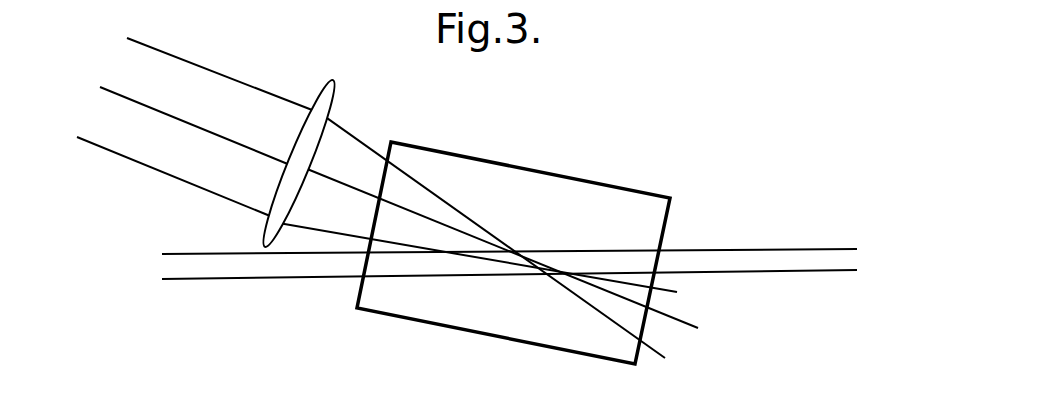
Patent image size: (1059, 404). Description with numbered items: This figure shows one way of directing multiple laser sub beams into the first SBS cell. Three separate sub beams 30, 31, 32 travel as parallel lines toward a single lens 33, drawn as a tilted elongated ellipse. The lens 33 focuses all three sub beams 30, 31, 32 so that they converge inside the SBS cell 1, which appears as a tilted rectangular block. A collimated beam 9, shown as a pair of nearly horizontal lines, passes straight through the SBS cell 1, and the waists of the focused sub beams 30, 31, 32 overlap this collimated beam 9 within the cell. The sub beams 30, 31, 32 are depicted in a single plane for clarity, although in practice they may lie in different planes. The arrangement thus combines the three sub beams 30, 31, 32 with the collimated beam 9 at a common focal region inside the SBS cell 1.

The SBS cell 1 is at (612, 170).
The collimated beam 9 is at (193, 254).
The sub beam 30 is at (195, 65).
The sub beam 31 is at (166, 113).
The sub beam 32 is at (133, 160).
The lens 33 is at (317, 100).